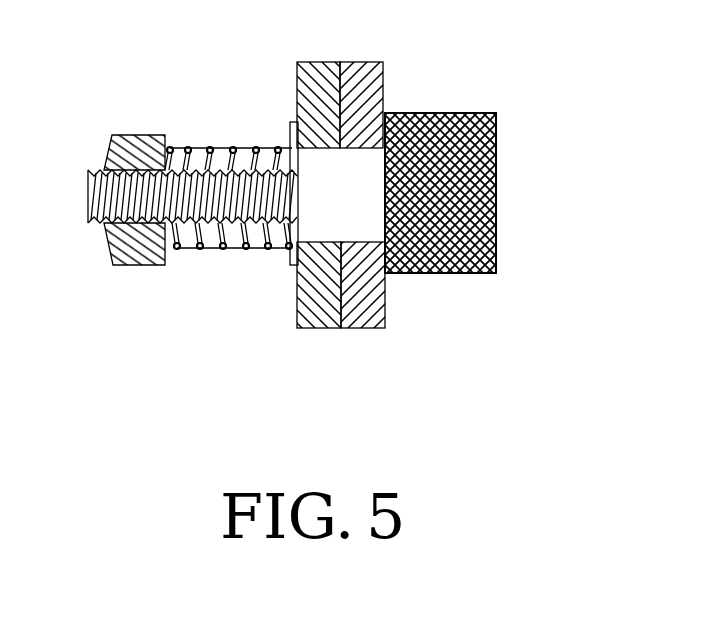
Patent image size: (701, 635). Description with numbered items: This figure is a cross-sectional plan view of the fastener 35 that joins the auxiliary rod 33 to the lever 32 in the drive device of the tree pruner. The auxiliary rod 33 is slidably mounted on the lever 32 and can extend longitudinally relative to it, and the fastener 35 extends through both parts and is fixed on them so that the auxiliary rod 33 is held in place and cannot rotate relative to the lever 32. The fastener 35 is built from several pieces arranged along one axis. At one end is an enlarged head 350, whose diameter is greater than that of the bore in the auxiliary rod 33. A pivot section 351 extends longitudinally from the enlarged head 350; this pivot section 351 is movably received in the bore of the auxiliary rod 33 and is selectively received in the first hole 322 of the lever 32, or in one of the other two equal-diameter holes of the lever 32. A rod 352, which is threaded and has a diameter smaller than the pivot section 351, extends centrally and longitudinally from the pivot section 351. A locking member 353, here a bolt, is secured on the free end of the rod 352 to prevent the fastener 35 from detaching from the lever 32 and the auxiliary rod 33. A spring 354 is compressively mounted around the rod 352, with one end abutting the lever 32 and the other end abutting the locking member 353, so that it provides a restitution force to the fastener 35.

The fastener 35 is at (448, 305).
The lever 32 is at (318, 97).
The auxiliary rod 33 is at (355, 97).
The first hole 322 is at (296, 162).
The enlarged head 350 is at (444, 175).
The pivot section 351 is at (337, 208).
The rod 352 is at (225, 195).
The locking member 353 is at (132, 157).
The spring 354 is at (191, 150).